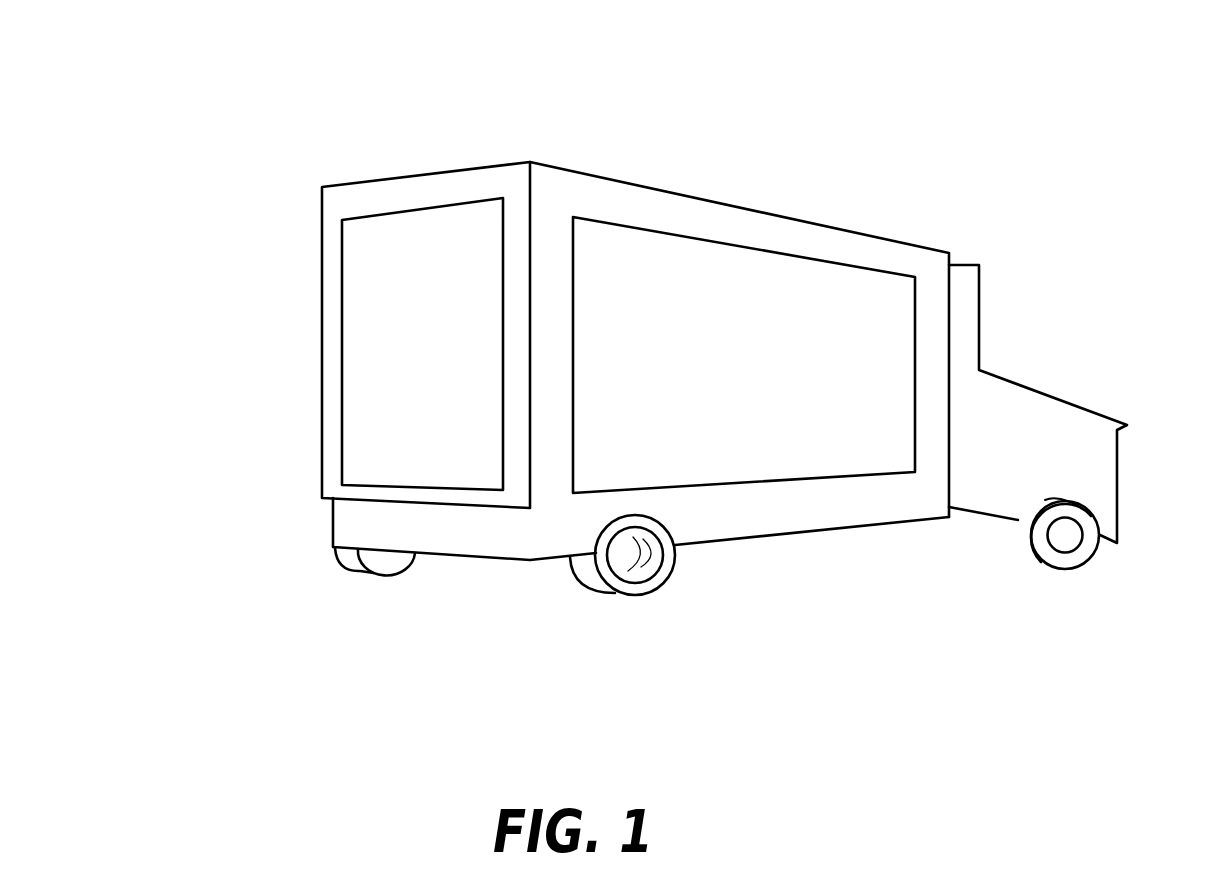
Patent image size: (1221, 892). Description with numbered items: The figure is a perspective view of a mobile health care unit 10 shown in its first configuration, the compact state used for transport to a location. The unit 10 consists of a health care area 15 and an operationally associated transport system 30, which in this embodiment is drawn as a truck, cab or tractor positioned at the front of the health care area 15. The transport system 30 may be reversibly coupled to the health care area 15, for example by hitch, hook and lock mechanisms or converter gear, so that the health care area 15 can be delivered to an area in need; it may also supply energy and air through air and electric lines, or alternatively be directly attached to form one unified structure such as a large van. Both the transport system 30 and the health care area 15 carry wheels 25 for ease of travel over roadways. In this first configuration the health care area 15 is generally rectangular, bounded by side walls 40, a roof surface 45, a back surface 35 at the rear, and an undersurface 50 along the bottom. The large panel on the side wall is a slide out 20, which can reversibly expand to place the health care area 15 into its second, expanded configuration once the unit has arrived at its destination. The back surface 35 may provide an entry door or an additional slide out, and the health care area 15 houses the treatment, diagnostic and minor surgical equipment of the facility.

The unit 10 is at (680, 391).
The health care area 15 is at (566, 391).
The slide out 20 is at (793, 488).
The wheels 25 is at (635, 596).
The transport system 30 is at (1085, 405).
The back surface 35 is at (342, 358).
The side walls 40 is at (553, 217).
The roof surface 45 is at (593, 172).
The undersurface 50 is at (740, 540).